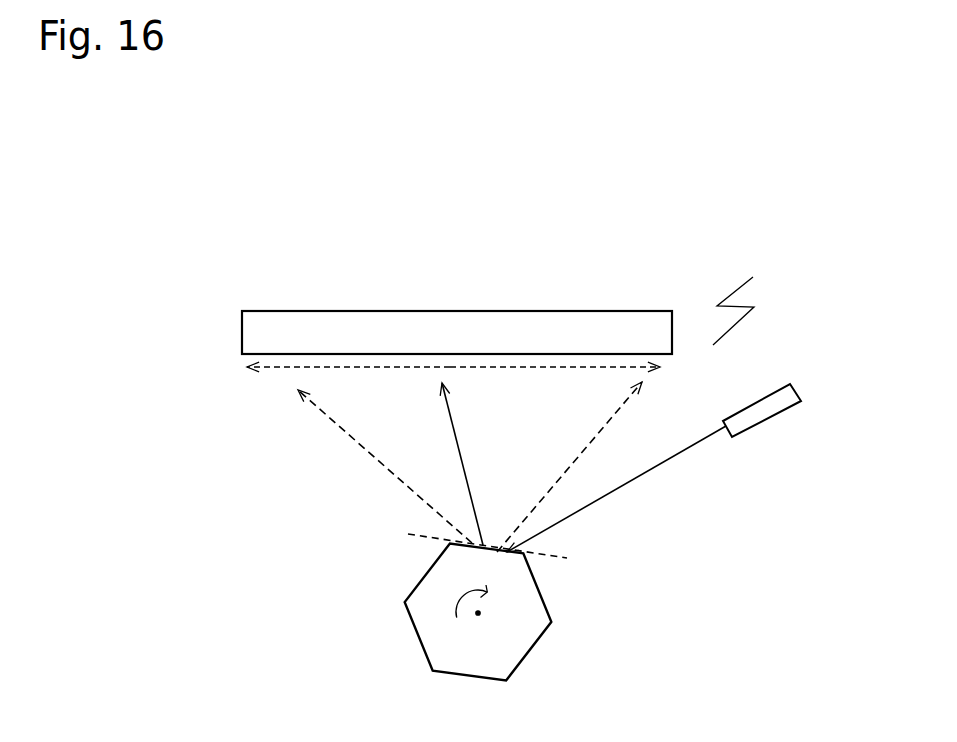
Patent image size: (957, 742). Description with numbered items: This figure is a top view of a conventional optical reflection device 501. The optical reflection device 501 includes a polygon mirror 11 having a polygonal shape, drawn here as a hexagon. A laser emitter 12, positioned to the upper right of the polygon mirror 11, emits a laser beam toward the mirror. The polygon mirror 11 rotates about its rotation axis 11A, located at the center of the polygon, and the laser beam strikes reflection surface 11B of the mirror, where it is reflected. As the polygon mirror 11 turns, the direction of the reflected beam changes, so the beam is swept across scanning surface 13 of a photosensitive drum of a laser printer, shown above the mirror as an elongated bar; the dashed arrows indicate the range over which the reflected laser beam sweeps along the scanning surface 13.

The optical reflection device 501 is at (746, 295).
The scanning surface 13 is at (473, 325).
The laser emitter 12 is at (763, 412).
The polygon mirror 11 is at (420, 623).
The rotation axis 11A is at (478, 613).
The reflection surface 11B is at (470, 467).